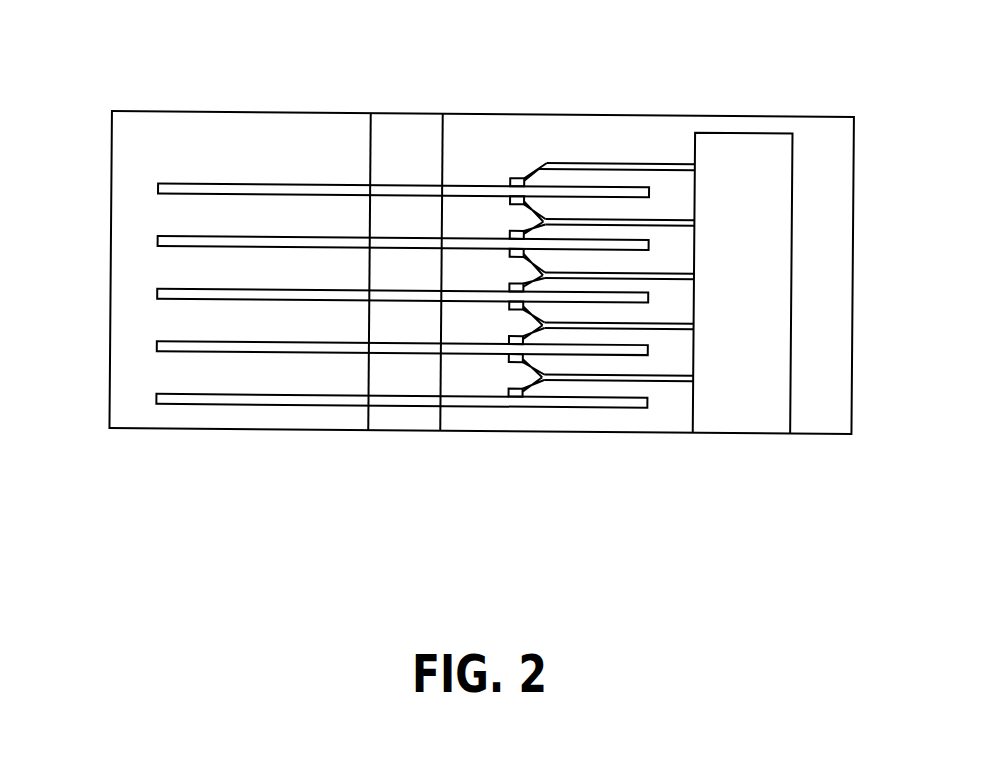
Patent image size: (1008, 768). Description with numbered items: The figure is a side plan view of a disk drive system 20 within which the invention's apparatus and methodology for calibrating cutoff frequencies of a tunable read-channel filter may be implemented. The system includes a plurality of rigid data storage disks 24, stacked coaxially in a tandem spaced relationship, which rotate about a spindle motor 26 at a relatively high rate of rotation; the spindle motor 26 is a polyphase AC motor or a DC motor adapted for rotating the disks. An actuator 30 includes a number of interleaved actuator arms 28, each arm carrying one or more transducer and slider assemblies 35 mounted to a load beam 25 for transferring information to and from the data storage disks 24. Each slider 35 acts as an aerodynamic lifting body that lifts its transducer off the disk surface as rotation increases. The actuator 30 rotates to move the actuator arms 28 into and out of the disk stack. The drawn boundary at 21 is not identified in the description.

The disk drive system 20 is at (750, 90).
The substrate 21 is at (853, 317).
The data storage disks 24 is at (158, 189).
The load beam 25 is at (533, 176).
The spindle motor 26 is at (397, 422).
The actuator arms 28 is at (600, 162).
The actuator 30 is at (740, 405).
The slider assemblies 35 is at (512, 178).